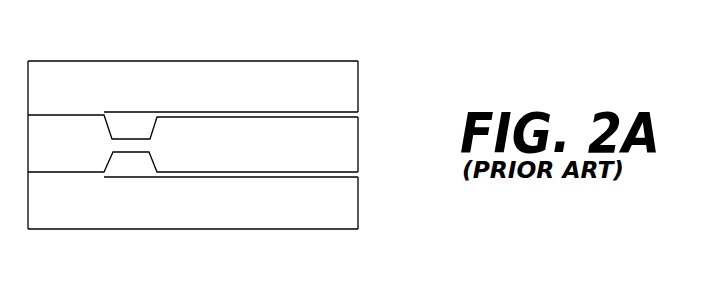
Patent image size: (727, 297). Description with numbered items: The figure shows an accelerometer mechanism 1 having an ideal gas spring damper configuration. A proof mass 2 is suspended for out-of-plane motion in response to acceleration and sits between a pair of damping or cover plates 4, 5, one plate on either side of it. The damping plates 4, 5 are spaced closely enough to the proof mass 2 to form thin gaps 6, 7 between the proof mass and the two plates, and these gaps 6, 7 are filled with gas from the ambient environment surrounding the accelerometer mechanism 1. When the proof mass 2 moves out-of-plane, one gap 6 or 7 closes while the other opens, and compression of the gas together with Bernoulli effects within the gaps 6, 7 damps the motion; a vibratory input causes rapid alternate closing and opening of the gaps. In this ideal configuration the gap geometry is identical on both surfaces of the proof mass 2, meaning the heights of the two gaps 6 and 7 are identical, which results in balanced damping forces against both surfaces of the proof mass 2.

The accelerometer mechanism 1 is at (401, 69).
The proof mass 2 is at (259, 152).
The damping plate 4 is at (259, 97).
The damping plate 5 is at (259, 214).
The gap 6 is at (370, 115).
The gap 7 is at (370, 175).